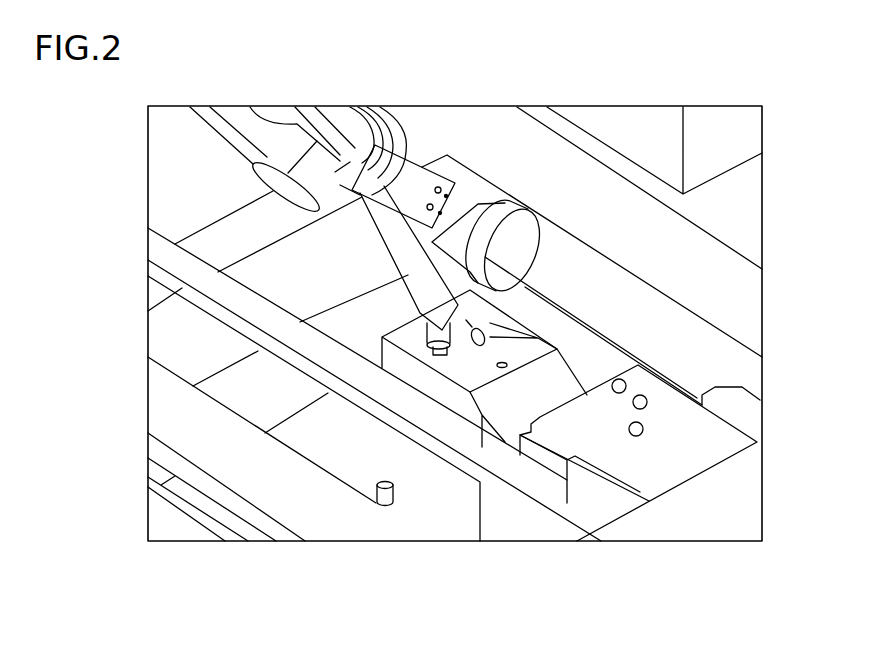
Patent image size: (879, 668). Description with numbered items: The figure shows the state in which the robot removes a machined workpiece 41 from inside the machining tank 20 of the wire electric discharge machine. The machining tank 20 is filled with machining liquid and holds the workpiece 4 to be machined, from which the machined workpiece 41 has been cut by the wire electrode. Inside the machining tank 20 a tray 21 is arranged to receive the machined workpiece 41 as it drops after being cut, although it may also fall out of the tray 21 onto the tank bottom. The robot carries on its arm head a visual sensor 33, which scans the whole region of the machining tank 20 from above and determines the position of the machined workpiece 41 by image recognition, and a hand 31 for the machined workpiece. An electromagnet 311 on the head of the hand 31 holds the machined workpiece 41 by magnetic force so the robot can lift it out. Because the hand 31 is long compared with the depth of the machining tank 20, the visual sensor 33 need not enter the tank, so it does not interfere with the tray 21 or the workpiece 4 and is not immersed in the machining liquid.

The hand for the machined workpiece 31 is at (420, 263).
The visual sensor 33 is at (535, 238).
The electromagnet 311 is at (467, 330).
The tray 21 is at (413, 363).
The machining tank 20 is at (567, 527).
The workpiece to be machined 4 is at (650, 482).
The machined workpiece 41 is at (468, 325).